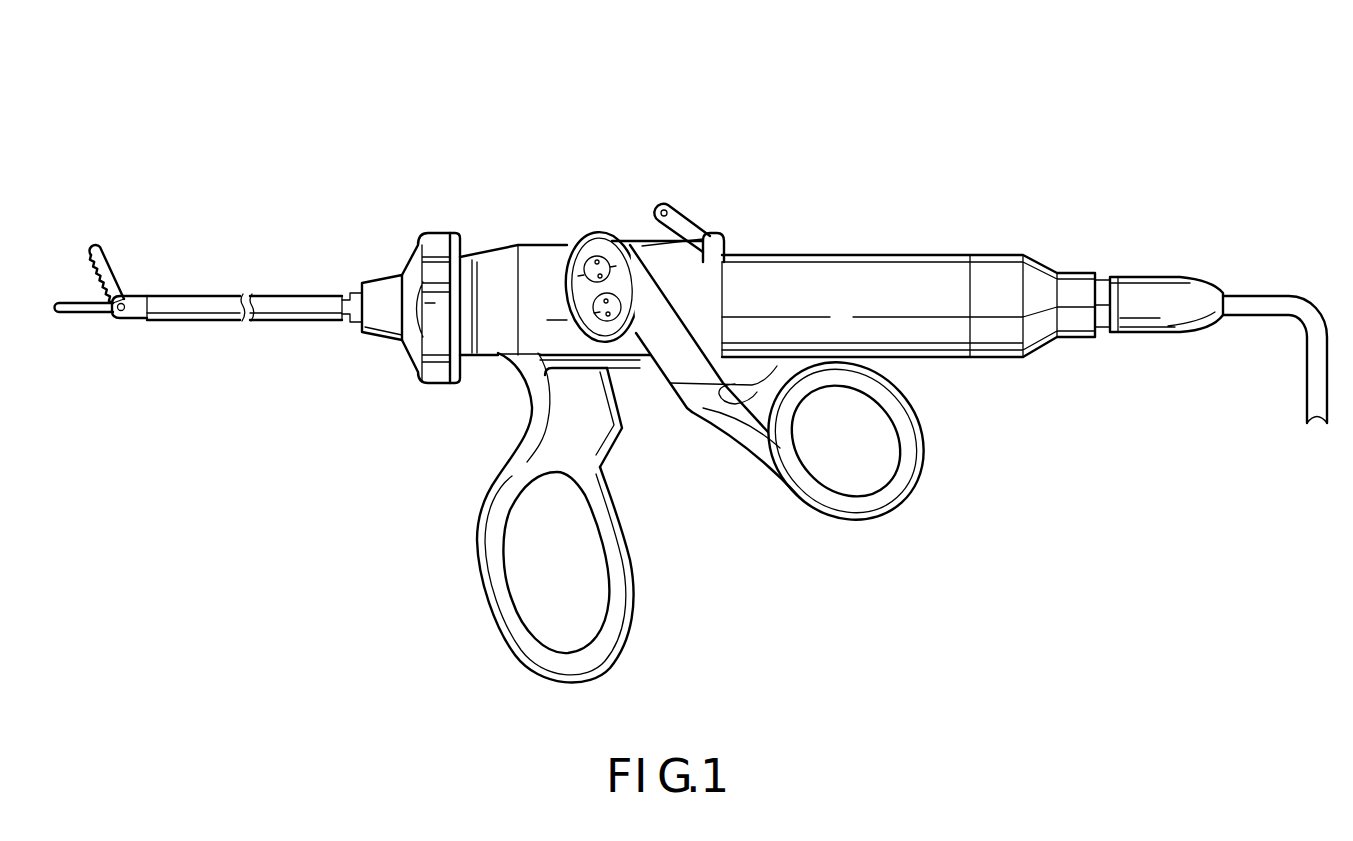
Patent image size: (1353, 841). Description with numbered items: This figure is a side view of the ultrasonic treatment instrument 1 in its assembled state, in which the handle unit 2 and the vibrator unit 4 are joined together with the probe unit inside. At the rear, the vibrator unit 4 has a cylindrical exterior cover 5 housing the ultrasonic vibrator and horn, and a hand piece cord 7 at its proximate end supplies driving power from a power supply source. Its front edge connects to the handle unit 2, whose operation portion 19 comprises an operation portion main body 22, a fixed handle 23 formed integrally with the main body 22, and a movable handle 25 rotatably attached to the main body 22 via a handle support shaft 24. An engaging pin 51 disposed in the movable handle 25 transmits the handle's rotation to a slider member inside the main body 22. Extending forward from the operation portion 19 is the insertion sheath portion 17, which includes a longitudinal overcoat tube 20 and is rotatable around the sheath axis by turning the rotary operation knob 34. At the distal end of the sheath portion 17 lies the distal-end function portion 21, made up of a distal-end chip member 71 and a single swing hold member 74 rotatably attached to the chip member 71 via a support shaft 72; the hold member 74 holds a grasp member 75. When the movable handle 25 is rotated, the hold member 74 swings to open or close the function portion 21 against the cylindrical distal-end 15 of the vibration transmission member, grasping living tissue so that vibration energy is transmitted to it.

The ultrasonic treatment instrument 1 is at (707, 112).
The handle unit 2 is at (471, 226).
The vibrator unit 4 is at (826, 236).
The exterior cover 5 is at (917, 262).
The hand piece cord 7 is at (1258, 298).
The distal-end 15 is at (70, 315).
The insertion sheath portion 17 is at (272, 278).
The operation portion 19 is at (626, 221).
The overcoat tube 20 is at (287, 315).
The distal-end function portion 21 is at (120, 273).
The operation portion main body 22 is at (542, 252).
The fixed handle 23 is at (600, 450).
The handle support shaft 24 is at (601, 262).
The movable handle 25 is at (910, 438).
The rotary operation knob 34 is at (417, 343).
The engaging pin 51 is at (638, 368).
The distal-end chip member 71 is at (135, 317).
The support shaft 72 is at (117, 315).
The hold member 74 is at (108, 262).
The grasp member 75 is at (92, 268).